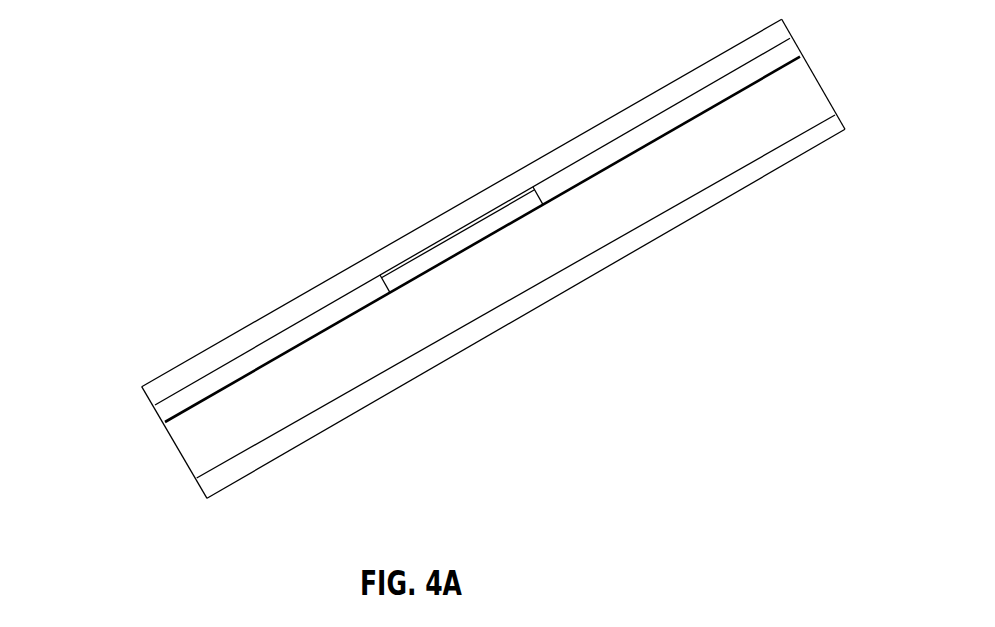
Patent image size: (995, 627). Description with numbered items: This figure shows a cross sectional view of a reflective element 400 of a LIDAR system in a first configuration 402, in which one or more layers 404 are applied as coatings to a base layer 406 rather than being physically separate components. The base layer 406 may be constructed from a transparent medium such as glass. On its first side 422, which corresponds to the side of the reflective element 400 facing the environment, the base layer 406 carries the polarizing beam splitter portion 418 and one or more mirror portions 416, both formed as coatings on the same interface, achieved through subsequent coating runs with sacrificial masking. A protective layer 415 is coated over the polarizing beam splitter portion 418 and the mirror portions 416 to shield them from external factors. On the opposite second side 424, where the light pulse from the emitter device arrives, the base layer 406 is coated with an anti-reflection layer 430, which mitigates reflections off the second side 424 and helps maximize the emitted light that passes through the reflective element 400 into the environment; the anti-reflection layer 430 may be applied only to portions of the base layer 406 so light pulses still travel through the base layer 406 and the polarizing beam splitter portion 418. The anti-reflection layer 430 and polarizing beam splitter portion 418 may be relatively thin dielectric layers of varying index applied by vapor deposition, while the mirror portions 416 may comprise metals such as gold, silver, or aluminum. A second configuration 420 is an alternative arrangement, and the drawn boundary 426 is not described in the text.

The reflective element 400 is at (451, 258).
The first configuration 402 is at (459, 258).
The layers 404 is at (202, 496).
The base layer 406 is at (376, 359).
The protective layer 415 is at (697, 68).
The mirror portions 416 is at (640, 132).
The polarizing beam splitter portion 418 is at (457, 243).
The second configuration 420 is at (409, 231).
The first side 422 is at (466, 212).
The second side 424 is at (521, 306).
The section boundary 426 is at (380, 281).
The anti-reflection layer 430 is at (607, 255).